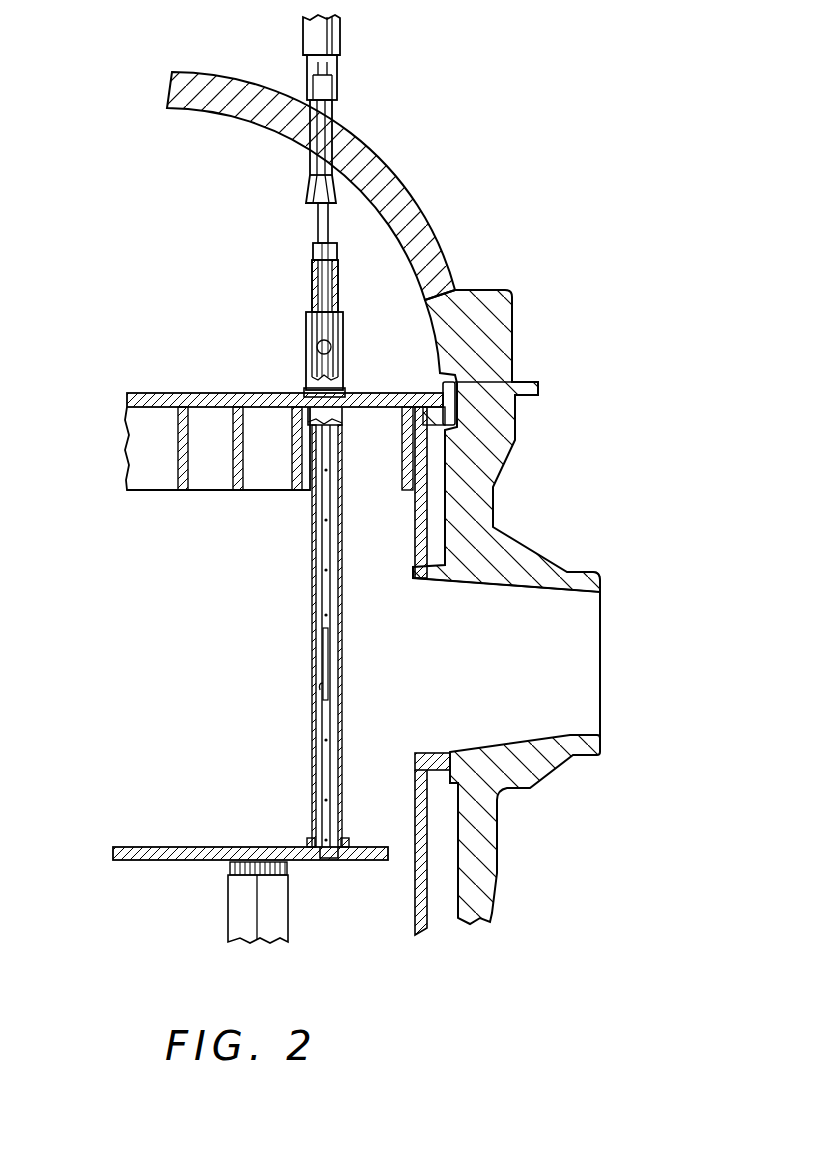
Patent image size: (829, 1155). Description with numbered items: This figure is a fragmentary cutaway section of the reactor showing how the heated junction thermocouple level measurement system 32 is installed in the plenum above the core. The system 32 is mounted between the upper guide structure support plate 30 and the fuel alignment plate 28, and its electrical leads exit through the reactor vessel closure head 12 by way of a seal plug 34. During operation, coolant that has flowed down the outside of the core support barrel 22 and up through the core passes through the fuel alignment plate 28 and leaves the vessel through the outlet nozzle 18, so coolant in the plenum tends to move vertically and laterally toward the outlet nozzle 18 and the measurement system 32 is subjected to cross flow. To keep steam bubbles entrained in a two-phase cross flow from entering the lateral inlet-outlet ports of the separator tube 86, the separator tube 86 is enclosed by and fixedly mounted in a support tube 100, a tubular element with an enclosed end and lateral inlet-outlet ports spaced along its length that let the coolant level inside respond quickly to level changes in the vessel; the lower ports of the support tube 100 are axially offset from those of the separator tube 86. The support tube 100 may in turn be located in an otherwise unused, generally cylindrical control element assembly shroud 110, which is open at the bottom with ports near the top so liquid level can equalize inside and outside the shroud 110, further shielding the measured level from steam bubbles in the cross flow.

The reactor vessel closure head 12 is at (498, 288).
The outlet nozzle 18 is at (593, 570).
The core support barrel 22 is at (423, 923).
The fuel alignment plate 28 is at (123, 847).
The upper guide structure support plate 30 is at (145, 393).
The heated junction thermocouple level measurement system 32 is at (290, 342).
The seal plug 34 is at (333, 120).
The separator tube 86 is at (324, 684).
The support tube 100 is at (333, 647).
The control element assembly shroud 110 is at (342, 725).